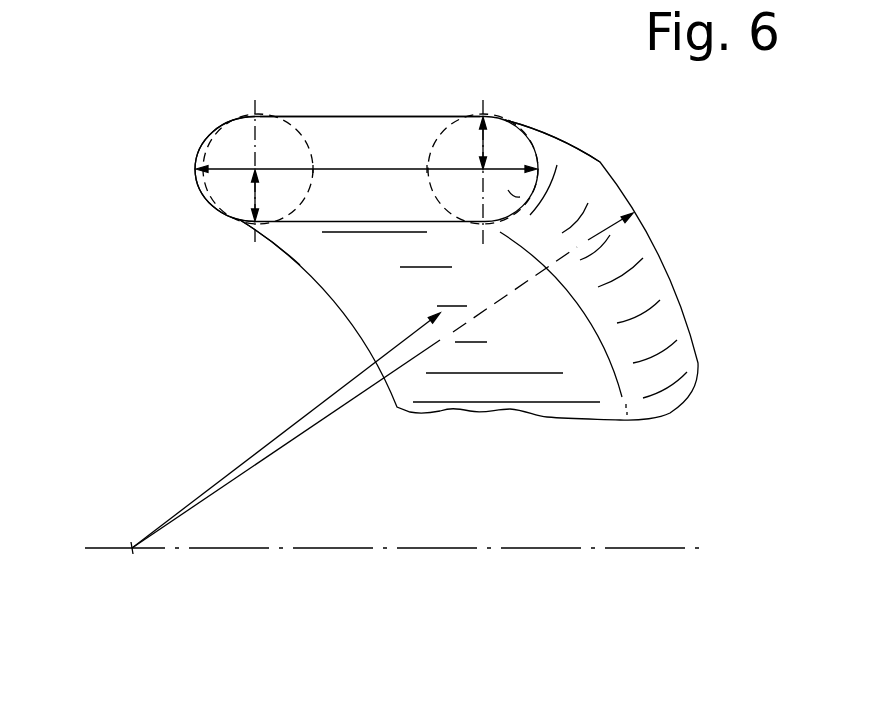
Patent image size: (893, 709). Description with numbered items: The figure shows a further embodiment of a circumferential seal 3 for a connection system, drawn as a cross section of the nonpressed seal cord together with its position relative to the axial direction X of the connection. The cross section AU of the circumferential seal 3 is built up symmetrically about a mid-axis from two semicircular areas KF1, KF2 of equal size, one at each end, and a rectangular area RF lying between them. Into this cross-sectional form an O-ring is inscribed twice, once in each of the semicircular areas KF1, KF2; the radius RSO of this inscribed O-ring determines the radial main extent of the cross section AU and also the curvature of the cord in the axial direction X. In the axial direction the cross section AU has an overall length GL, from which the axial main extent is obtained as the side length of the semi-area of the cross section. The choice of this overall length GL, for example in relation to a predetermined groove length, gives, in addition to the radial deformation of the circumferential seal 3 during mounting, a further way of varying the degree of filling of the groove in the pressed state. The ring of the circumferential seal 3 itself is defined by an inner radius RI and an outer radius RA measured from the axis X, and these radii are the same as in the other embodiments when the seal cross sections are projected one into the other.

The circumferential seal 3 is at (213, 338).
The semicircular area KF1 is at (231, 140).
The semicircular area KF2 is at (530, 206).
The cross section AU is at (361, 132).
The axial overall length GL is at (358, 176).
The circular radius RSO is at (485, 147).
The rectangular area RF is at (330, 201).
The inner radius RI is at (308, 413).
The outer radius RA is at (288, 437).
The axial direction X is at (394, 552).